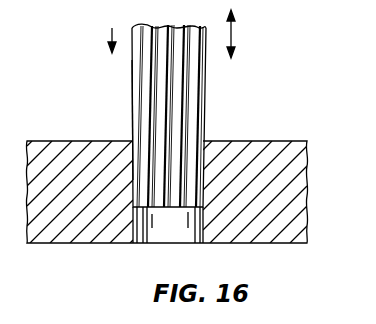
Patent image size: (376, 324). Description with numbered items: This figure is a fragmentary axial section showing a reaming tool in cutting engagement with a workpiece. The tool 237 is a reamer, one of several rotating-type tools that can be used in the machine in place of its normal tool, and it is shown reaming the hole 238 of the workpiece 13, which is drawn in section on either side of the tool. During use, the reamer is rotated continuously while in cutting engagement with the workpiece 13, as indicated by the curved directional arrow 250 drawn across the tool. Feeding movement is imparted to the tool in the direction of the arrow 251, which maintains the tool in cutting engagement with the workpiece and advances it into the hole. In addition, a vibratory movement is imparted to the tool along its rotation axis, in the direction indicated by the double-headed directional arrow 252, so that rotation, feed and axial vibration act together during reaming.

The workpiece 13 is at (285, 217).
The reamer 237 is at (132, 120).
The hole 238 is at (153, 236).
The directional arrow 250 is at (112, 89).
The arrow 251 is at (110, 40).
The directional arrow 252 is at (235, 33).